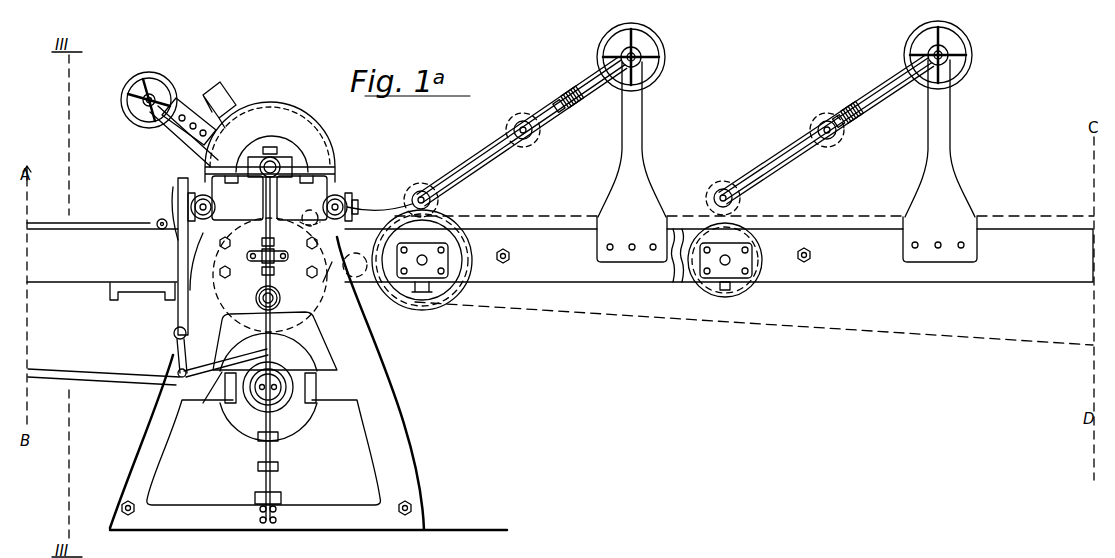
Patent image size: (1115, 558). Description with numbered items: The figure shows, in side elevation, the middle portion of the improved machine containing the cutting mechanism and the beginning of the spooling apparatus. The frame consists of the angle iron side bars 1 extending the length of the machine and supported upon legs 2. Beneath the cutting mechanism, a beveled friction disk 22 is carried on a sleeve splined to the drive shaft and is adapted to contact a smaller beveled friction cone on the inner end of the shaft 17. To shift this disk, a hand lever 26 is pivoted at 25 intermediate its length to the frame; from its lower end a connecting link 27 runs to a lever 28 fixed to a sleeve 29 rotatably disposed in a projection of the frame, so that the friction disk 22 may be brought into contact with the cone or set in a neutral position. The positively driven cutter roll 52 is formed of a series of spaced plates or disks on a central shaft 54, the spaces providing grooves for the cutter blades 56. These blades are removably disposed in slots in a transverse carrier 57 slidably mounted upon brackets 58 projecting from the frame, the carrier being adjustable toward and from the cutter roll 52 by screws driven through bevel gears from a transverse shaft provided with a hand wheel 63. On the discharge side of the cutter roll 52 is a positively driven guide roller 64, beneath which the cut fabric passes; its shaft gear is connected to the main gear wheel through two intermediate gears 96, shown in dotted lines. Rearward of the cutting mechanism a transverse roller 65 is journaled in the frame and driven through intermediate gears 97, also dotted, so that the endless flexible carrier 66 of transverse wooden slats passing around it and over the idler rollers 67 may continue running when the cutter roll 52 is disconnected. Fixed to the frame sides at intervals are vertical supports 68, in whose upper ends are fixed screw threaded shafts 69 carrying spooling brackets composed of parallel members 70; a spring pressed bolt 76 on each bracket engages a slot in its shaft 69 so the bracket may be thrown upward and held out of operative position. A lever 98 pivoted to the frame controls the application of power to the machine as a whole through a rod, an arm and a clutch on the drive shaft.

The angle iron side bars 1 is at (882, 285).
The legs 2 is at (402, 436).
The shaft 17 is at (96, 376).
The beveled friction disk 22 is at (302, 416).
The pivot 25 is at (174, 333).
The hand lever 26 is at (178, 247).
The connecting link 27 is at (203, 404).
The lever 28 is at (276, 351).
The sleeve 29 is at (245, 412).
The cutter roll 52 is at (290, 104).
The central shaft 54 is at (286, 160).
The cutter blades 56 is at (229, 100).
The transverse carrier 57 is at (186, 90).
The brackets 58 is at (178, 136).
The hand wheel 63 is at (138, 74).
The guide roller 64 is at (356, 197).
The roller 65 is at (421, 300).
The endless flexible carrier 66 is at (832, 216).
The idler rollers 67 is at (751, 291).
The vertical supports 68 is at (632, 138).
The screw threaded shaft 69 is at (942, 52).
The parallel members 70 is at (486, 160).
The spring pressed bolt 76 is at (591, 80).
The intermediate gears 96 is at (310, 215).
The intermediate gears 97 is at (324, 272).
The lever 98 is at (262, 283).